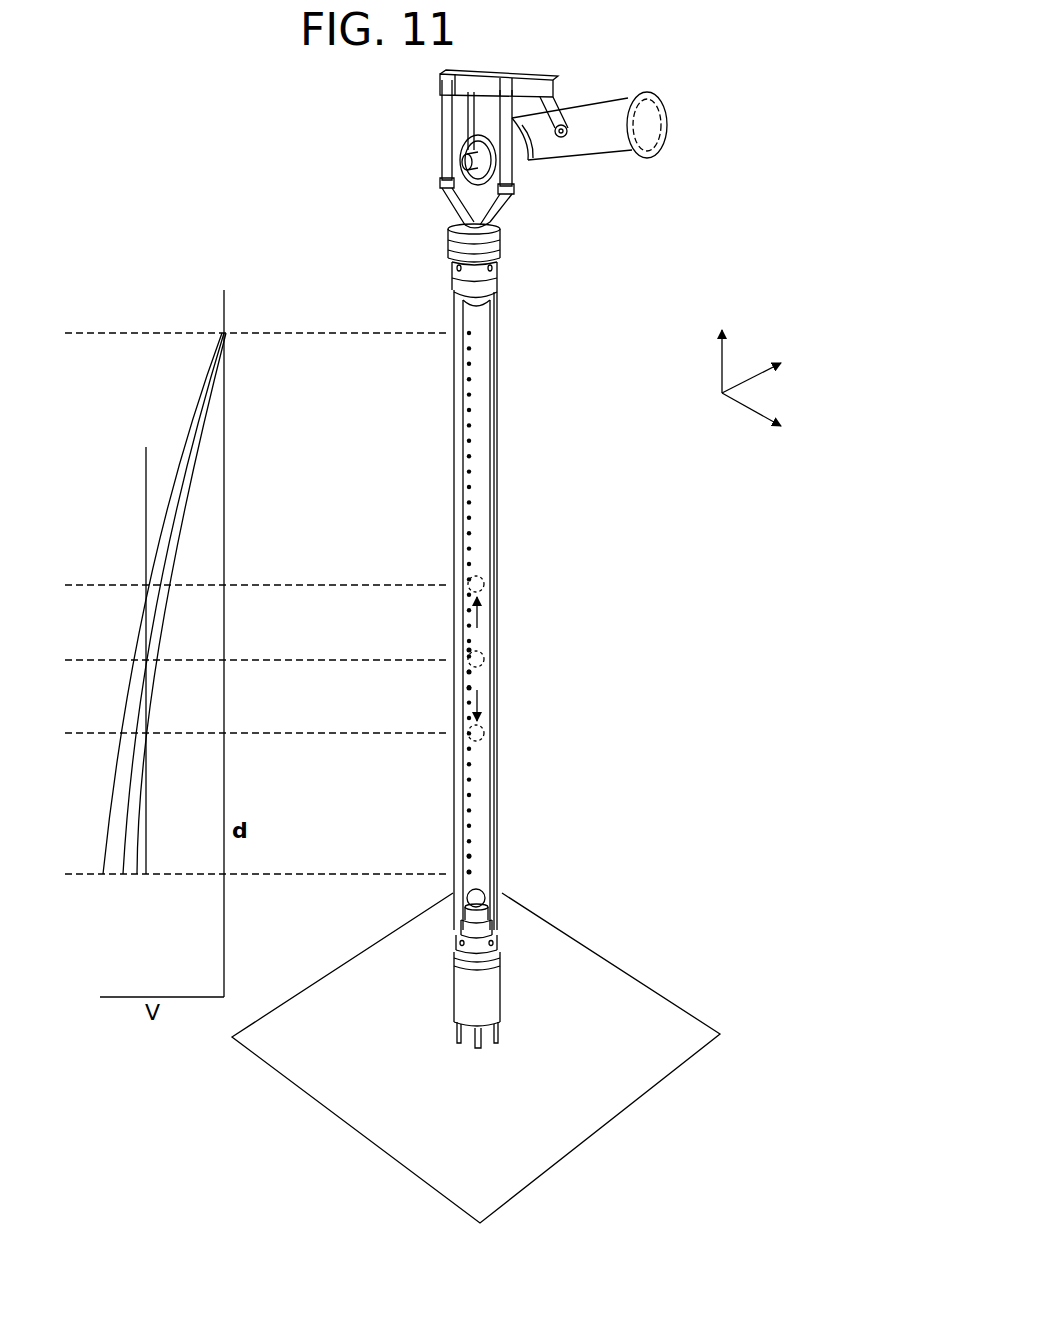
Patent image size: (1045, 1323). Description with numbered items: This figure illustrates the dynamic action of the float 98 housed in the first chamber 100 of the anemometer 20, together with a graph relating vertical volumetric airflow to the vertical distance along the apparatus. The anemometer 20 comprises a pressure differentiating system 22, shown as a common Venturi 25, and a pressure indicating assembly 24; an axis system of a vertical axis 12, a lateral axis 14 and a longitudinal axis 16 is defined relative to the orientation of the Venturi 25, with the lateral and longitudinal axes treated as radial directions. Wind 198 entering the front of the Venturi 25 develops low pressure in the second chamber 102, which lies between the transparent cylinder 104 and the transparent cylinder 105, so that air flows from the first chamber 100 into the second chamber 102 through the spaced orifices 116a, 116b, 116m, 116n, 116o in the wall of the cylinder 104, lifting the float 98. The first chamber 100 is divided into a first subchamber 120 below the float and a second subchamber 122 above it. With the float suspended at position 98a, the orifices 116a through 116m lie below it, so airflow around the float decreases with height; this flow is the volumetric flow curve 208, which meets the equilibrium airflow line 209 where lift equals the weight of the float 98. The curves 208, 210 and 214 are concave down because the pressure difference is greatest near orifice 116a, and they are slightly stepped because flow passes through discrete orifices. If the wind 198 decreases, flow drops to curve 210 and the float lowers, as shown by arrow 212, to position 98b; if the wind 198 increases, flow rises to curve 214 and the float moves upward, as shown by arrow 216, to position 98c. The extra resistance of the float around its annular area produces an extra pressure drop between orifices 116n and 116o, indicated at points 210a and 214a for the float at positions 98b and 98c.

The vertical axis 12 is at (720, 357).
The lateral axis 14 is at (748, 413).
The longitudinal axis 16 is at (755, 380).
The anemometer 20 is at (662, 262).
The pressure differentiating system 22 is at (473, 139).
The pressure indicating assembly 24 is at (589, 668).
The Venturi 25 is at (592, 150).
The float 98 is at (484, 894).
The float position 98a is at (484, 659).
The float position 98b is at (484, 733).
The float position 98c is at (484, 584).
The first chamber 100 is at (477, 405).
The second chamber 102 is at (490, 380).
The cylinder 104 is at (497, 335).
The cylinder 105 is at (495, 357).
The orifice 116a is at (468, 872).
The orifice 116b is at (468, 856).
The orifice 116m is at (468, 688).
The orifice 116n is at (468, 672).
The orifice 116o is at (468, 650).
The first subchamber 120 is at (483, 802).
The second subchamber 122 is at (480, 428).
The wind 198 is at (418, 172).
The volumetric flow curve 208 is at (146, 660).
The equilibrium airflow line 209 is at (146, 478).
The volumetric flow curve 210 is at (137, 858).
The pressure drop point 210a is at (146, 733).
The arrow 212 is at (478, 693).
The volumetric flow curve 214 is at (107, 806).
The pressure drop point 214a is at (146, 585).
The arrow 216 is at (478, 622).